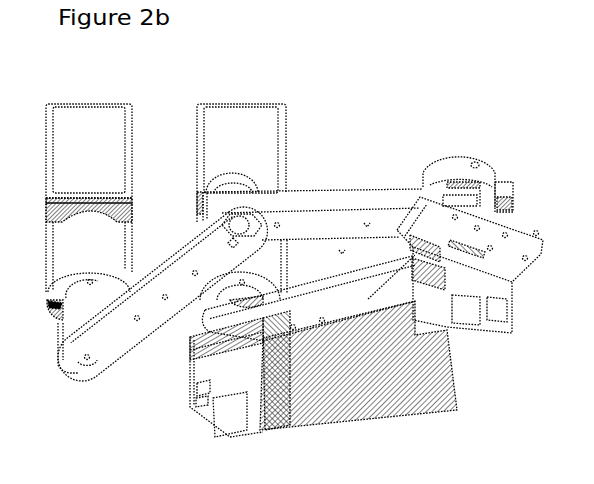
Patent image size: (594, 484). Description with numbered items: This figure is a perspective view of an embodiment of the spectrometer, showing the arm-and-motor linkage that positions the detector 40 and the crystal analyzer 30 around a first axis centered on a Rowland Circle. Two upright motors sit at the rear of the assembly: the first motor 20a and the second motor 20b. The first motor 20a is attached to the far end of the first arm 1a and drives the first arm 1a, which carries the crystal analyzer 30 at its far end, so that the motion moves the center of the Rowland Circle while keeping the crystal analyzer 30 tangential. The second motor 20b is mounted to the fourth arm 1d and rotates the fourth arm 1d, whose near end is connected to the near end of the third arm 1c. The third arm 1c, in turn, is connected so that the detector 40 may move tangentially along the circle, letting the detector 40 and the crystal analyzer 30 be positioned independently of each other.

The second motor 20b is at (89, 238).
The first motor 20a is at (241, 163).
The third arm 1c is at (350, 207).
The fourth arm 1d is at (115, 367).
The first arm 1a is at (343, 332).
The crystal analyzer 30 is at (185, 420).
The detector 40 is at (502, 370).